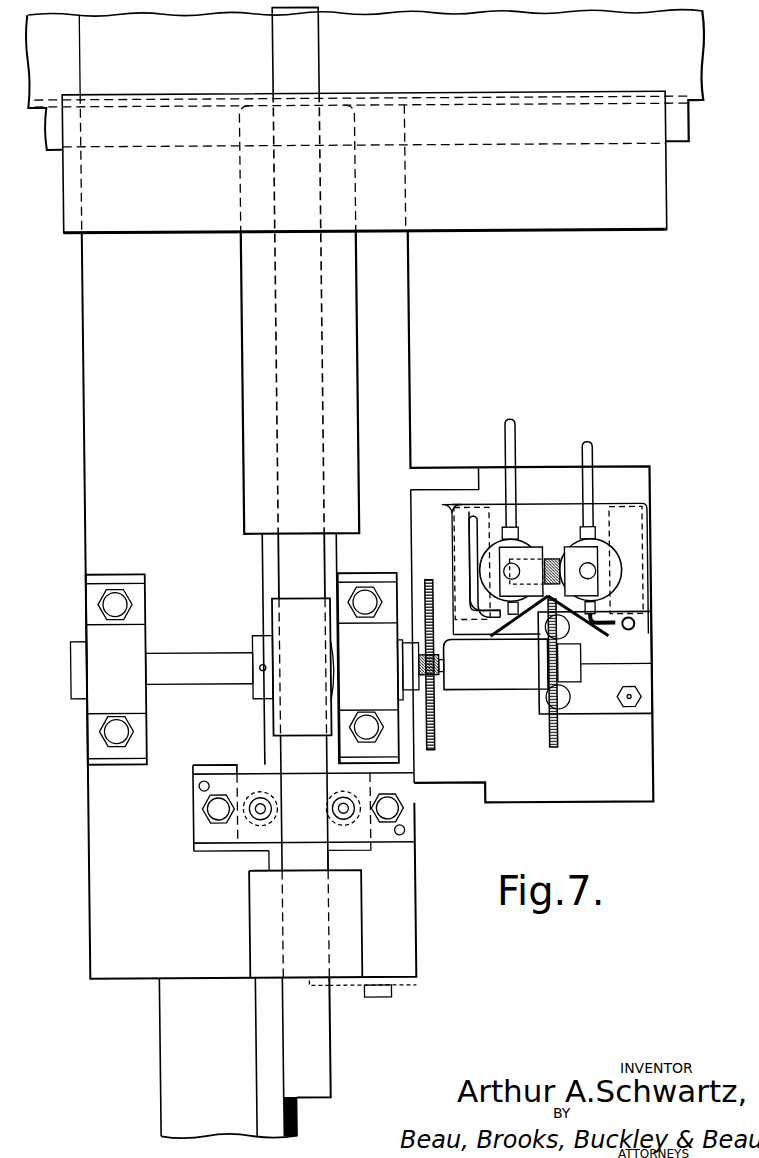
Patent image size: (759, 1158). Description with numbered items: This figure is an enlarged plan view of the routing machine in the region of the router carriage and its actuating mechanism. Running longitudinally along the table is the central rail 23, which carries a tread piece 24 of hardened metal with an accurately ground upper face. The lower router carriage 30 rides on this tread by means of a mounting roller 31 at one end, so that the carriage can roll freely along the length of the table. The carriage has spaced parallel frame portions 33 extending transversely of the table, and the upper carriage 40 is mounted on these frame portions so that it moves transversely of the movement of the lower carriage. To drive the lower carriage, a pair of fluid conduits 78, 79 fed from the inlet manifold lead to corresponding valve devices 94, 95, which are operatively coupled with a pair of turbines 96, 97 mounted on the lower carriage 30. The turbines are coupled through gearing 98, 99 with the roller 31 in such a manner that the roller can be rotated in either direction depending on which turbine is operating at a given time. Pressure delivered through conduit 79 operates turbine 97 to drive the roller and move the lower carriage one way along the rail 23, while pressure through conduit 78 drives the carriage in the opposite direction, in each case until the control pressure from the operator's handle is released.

The central rail 23 is at (228, 1058).
The tread piece 24 is at (313, 1042).
The lower router carriage 30 is at (412, 335).
The mounting roller 31 is at (303, 663).
The frame portions 33 is at (447, 147).
The upper carriage 40 is at (456, 239).
The fluid conduit 78 is at (517, 432).
The fluid conduit 79 is at (594, 452).
The valve device 94 is at (521, 552).
The valve device 95 is at (603, 553).
The turbine 96 is at (463, 527).
The turbine 97 is at (632, 552).
The gearing 98 is at (547, 733).
The gearing 99 is at (434, 730).